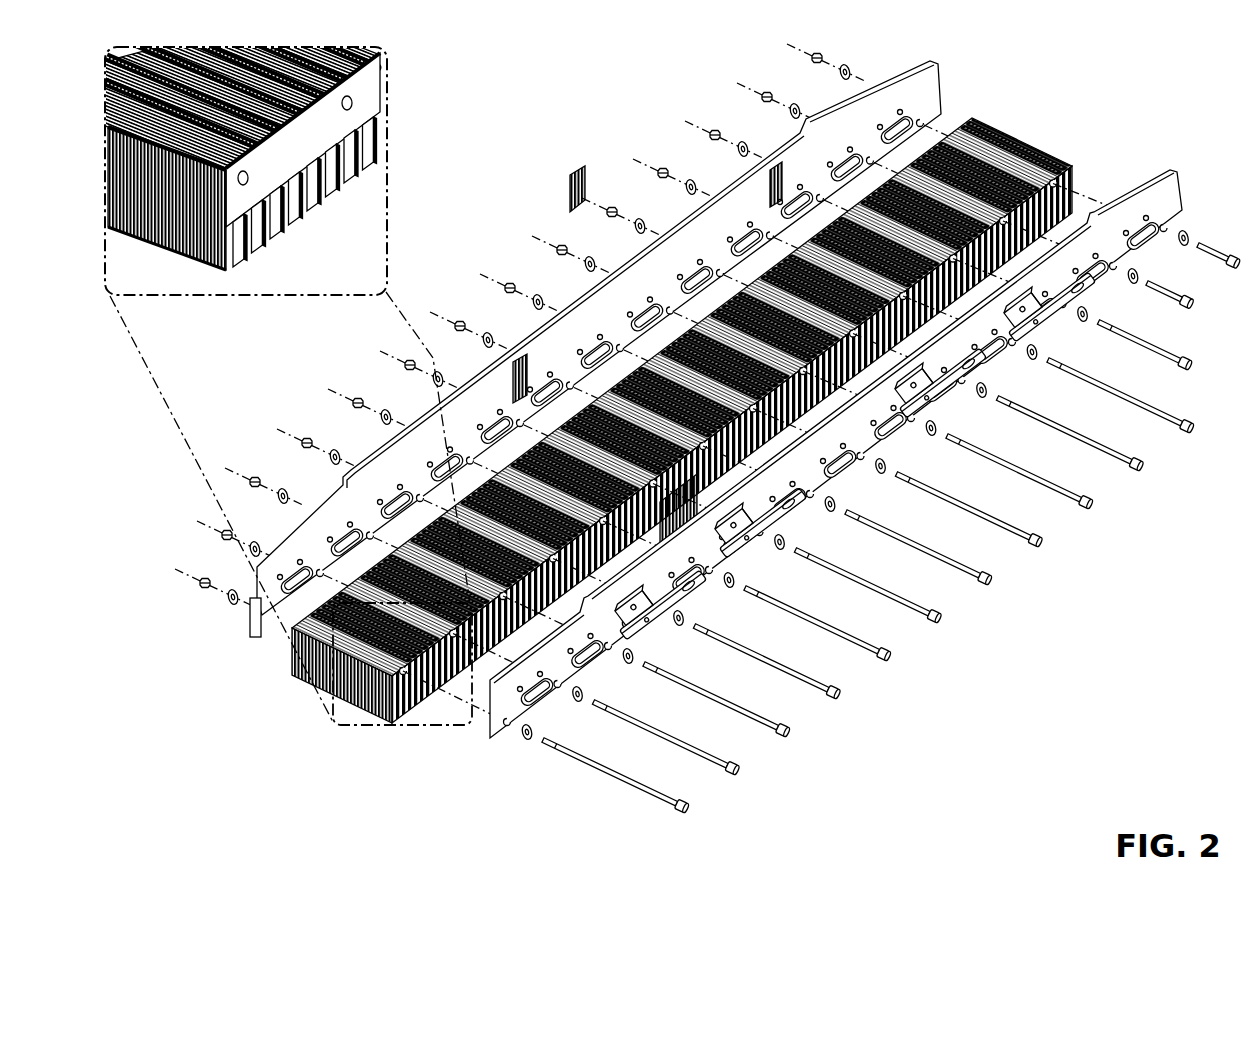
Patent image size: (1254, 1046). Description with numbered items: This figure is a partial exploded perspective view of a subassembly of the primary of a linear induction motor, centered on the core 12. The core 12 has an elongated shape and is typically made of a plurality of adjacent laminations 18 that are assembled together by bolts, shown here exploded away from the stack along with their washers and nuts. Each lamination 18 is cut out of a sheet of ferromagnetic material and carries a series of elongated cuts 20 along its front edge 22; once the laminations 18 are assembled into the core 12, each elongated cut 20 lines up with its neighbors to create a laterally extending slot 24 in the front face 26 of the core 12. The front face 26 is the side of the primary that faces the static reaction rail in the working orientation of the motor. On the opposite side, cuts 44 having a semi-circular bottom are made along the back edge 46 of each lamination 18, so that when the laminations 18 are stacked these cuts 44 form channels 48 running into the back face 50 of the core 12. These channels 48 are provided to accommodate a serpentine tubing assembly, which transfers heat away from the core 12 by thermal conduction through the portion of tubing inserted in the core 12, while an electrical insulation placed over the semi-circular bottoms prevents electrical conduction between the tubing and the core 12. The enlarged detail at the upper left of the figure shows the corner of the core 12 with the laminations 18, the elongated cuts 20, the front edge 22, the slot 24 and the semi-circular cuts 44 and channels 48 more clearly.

The core 12 is at (601, 450).
The laminations 18 is at (367, 683).
The elongated cuts 20 is at (249, 238).
The front edge 22 is at (245, 285).
The laterally extending slot 24 is at (237, 262).
The front face 26 is at (363, 730).
The cuts 44 is at (268, 165).
The back edge 46 is at (300, 624).
The channels 48 is at (243, 137).
The back face 50 is at (318, 618).